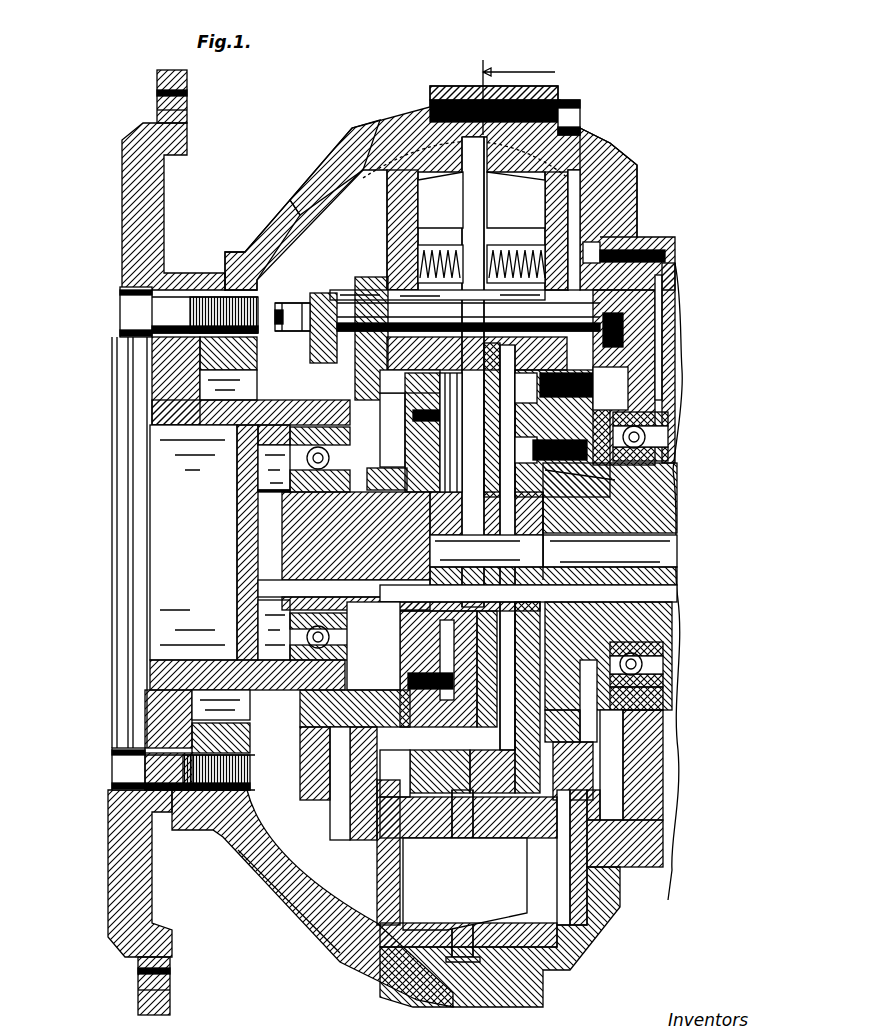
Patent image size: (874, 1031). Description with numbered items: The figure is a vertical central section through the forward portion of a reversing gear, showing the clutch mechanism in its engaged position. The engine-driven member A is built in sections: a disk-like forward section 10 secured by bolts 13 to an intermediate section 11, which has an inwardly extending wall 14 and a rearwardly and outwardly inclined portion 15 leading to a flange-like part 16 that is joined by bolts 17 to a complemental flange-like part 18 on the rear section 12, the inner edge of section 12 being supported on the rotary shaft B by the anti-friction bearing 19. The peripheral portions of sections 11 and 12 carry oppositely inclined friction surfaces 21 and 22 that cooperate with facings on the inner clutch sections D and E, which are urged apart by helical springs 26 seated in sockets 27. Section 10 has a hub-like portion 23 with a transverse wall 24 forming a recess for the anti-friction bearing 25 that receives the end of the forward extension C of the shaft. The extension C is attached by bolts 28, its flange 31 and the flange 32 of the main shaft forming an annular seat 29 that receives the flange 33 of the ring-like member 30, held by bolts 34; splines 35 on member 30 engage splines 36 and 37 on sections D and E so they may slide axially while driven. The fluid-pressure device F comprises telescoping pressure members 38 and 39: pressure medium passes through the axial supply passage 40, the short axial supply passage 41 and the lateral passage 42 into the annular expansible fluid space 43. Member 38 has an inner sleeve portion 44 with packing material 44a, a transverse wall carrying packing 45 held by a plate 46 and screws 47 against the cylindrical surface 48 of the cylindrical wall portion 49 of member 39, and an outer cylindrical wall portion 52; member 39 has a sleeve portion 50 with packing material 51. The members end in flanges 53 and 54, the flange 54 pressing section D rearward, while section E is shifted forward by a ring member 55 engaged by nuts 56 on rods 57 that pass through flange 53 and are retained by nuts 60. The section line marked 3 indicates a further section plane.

The forward section 10 is at (130, 198).
The intermediate section 11 is at (302, 193).
The rear section 12 is at (600, 155).
The bolts 13 is at (128, 306).
The inwardly extending wall 14 is at (215, 348).
The rearwardly and outwardly inclined portion 15 is at (262, 240).
The flange-like part 16 is at (447, 90).
The bolts 17 is at (577, 115).
The complemental flange-like part 18 is at (558, 95).
The anti-friction bearing 19 is at (640, 425).
The friction surface 21 is at (380, 122).
The friction surface 22 is at (590, 140).
The hub-like portion 23 is at (230, 437).
The transverse wall 24 is at (275, 468).
The anti-friction bearing 25 is at (290, 478).
The helical springs 26 is at (439, 250).
The sockets 27 is at (502, 250).
The bolts 28 is at (660, 472).
The annular seat 29 is at (540, 405).
The ring-like member 30 is at (585, 335).
The flange 31 is at (615, 480).
The flange 32 is at (600, 370).
The flange 33 is at (450, 400).
The bolts 34 is at (560, 380).
The splines 35 is at (397, 290).
The splines 36 is at (357, 323).
The splines 37 is at (655, 280).
The pressure member 38 is at (427, 437).
The pressure member 39 is at (562, 520).
The axial supply passage 40 is at (660, 551).
The short axial supply passage 41 is at (486, 551).
The lateral passage 42 is at (430, 512).
The annular expansible fluid space 43 is at (410, 462).
The inner sleeve portion 44 is at (388, 664).
The packing material 44a is at (300, 610).
The packing 45 is at (415, 690).
The plate 46 is at (515, 645).
The screws 47 is at (500, 670).
The cylindrical surface 48 is at (350, 775).
The cylindrical wall portion 49 is at (370, 752).
The sleeve portion 50 is at (540, 605).
The packing material 51 is at (553, 575).
The outer cylindrical wall portion 52 is at (330, 710).
The flange 53 is at (310, 765).
The flange 54 is at (312, 898).
The ring member 55 is at (577, 762).
The nuts 56 is at (625, 340).
The rods 57 is at (620, 305).
The nuts 60 is at (302, 305).
The section line 3 is at (513, 469).
The engine-driven member A is at (320, 170).
The rotary shaft B is at (667, 492).
The forward extension C is at (295, 551).
The inner clutch section D is at (390, 204).
The inner clutch section E is at (610, 185).
The fluid-pressure device F is at (407, 412).